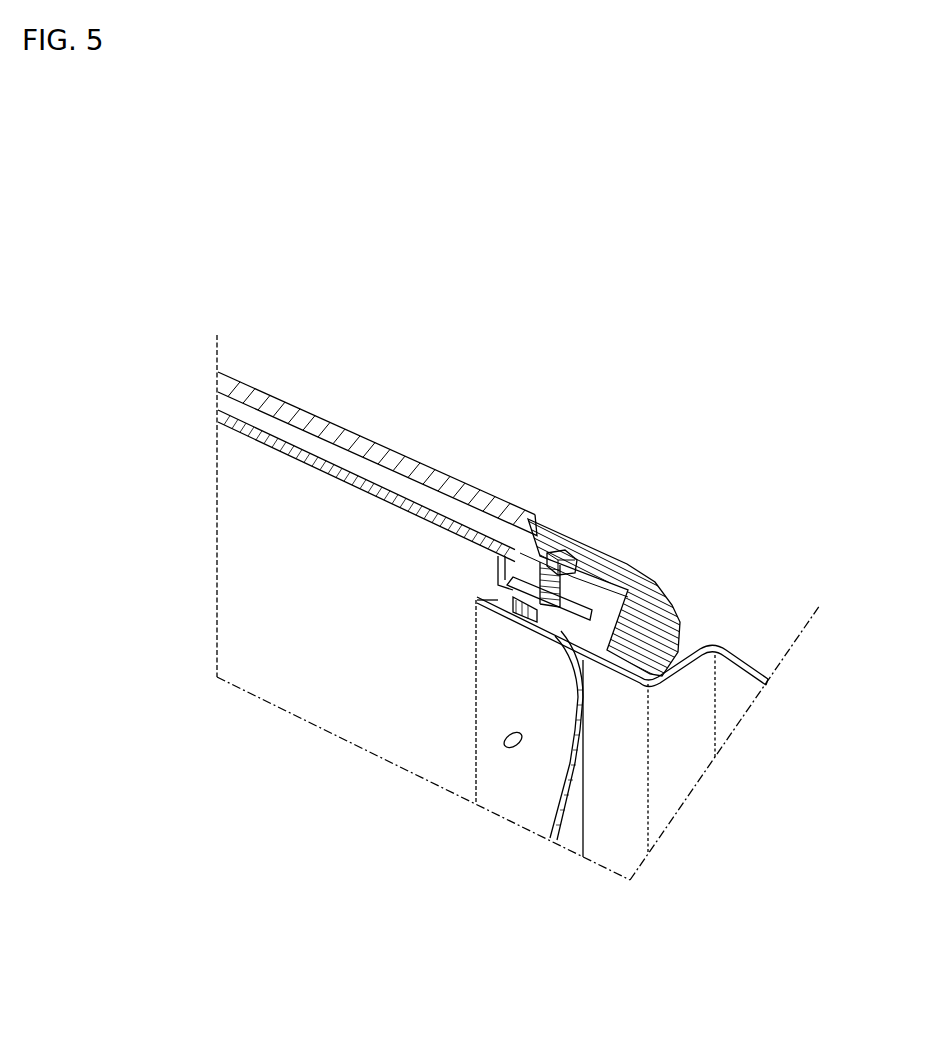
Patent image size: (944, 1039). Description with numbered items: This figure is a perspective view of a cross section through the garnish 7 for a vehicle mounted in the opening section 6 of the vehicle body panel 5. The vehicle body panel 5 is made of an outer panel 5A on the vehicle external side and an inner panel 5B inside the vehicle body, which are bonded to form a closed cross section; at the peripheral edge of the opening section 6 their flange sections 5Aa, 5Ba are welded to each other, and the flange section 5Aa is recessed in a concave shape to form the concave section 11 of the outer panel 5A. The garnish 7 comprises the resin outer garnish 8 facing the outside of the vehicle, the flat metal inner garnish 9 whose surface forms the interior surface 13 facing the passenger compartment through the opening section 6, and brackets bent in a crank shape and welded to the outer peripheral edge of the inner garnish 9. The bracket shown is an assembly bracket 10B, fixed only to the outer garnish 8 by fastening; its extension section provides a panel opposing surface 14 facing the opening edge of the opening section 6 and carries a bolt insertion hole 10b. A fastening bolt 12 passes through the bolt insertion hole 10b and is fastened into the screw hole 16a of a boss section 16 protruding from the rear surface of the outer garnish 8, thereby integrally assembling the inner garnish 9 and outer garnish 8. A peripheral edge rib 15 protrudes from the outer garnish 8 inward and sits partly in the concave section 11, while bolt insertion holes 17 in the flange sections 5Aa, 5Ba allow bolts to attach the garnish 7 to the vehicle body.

The vehicle body panel 5 is at (782, 669).
The outer panel 5A is at (740, 667).
The inner panel 5B is at (568, 832).
The flange section 5Aa is at (578, 602).
The flange section 5Ba is at (560, 658).
The opening section 6 is at (498, 600).
The garnish for a vehicle 7 is at (350, 423).
The outer garnish 8 is at (282, 396).
The inner garnish 9 is at (253, 463).
The assembly bracket 10B is at (512, 526).
The bolt insertion hole 10b is at (570, 557).
The concave section 11 is at (697, 647).
The fastening bolt 12 is at (540, 625).
The interior surface 13 is at (278, 564).
The panel opposing surface 14 is at (505, 615).
The peripheral edge rib 15 is at (630, 632).
The boss section 16 is at (583, 555).
The screw hole 16a is at (560, 553).
The bolt insertion hole 17 is at (580, 657).